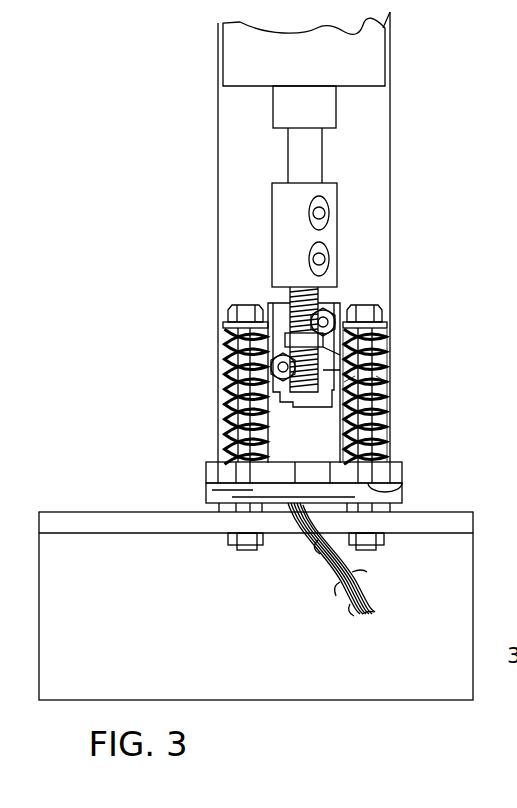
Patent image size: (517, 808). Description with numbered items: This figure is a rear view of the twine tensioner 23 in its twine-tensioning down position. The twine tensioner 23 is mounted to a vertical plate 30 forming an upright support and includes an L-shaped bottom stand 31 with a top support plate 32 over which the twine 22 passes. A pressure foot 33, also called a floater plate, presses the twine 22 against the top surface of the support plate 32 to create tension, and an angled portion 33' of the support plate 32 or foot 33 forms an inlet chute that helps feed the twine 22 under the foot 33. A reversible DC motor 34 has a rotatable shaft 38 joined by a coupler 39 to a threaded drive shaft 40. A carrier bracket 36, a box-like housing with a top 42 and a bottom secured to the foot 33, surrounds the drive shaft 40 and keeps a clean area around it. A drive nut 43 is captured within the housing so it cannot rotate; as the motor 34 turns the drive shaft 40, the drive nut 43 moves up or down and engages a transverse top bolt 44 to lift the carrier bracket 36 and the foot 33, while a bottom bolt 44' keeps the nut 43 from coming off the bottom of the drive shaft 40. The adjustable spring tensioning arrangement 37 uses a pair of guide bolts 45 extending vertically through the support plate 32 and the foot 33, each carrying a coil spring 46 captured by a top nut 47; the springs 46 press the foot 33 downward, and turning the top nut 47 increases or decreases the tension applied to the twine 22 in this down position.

The twine 22 is at (358, 578).
The twine tensioner 23 is at (412, 98).
The vertical plate 30 is at (391, 197).
The L-shaped bottom stand 31 is at (312, 700).
The top support plate 32 is at (108, 512).
The pressure foot 33 is at (272, 476).
The angled portion 33' is at (339, 498).
The reversible DC motor 34 is at (235, 72).
The carrier bracket 36 is at (342, 302).
The adjustable spring tensioning arrangement 37 is at (230, 274).
The rotatable shaft 38 is at (322, 160).
The coupler 39 is at (277, 230).
The threaded drive shaft 40 is at (315, 300).
The top 42 is at (272, 303).
The drive nut 43 is at (383, 352).
The top bolt 44 is at (333, 325).
The bottom bolt 44' is at (386, 387).
The guide bolts 45 is at (223, 400).
The coil spring 46 is at (223, 364).
The top nut 47 is at (228, 318).